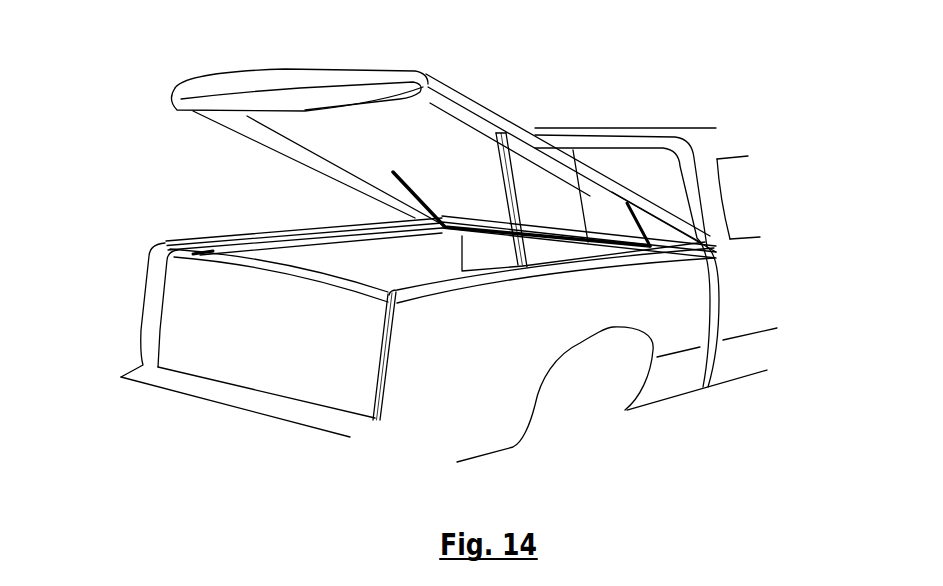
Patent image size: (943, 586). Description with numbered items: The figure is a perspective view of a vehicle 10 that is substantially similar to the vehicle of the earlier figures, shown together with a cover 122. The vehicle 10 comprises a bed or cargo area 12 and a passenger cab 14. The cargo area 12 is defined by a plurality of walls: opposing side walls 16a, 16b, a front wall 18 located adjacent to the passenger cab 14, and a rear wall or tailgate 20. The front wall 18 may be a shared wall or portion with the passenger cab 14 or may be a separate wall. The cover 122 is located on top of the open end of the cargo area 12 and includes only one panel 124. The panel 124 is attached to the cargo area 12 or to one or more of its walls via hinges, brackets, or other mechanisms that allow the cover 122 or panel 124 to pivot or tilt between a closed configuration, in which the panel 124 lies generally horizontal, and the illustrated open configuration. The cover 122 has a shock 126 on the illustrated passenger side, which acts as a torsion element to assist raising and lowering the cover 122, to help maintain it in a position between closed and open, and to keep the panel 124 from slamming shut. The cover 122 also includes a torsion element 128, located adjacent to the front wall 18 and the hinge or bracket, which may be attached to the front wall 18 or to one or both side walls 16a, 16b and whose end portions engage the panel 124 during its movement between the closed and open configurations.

The vehicle 10 is at (136, 80).
The cargo area 12 is at (165, 218).
The passenger cab 14 is at (731, 143).
The side wall 16a is at (273, 263).
The side wall 16b is at (482, 387).
The front wall 18 is at (547, 250).
The tailgate 20 is at (282, 345).
The cover 122 is at (457, 81).
The panel 124 is at (308, 78).
The shock 126 is at (510, 177).
The torsion element 128 is at (396, 214).